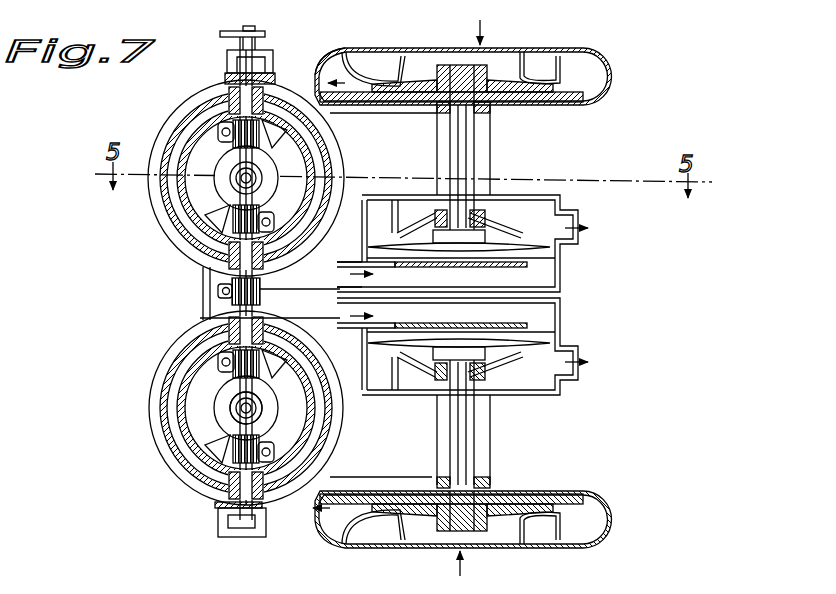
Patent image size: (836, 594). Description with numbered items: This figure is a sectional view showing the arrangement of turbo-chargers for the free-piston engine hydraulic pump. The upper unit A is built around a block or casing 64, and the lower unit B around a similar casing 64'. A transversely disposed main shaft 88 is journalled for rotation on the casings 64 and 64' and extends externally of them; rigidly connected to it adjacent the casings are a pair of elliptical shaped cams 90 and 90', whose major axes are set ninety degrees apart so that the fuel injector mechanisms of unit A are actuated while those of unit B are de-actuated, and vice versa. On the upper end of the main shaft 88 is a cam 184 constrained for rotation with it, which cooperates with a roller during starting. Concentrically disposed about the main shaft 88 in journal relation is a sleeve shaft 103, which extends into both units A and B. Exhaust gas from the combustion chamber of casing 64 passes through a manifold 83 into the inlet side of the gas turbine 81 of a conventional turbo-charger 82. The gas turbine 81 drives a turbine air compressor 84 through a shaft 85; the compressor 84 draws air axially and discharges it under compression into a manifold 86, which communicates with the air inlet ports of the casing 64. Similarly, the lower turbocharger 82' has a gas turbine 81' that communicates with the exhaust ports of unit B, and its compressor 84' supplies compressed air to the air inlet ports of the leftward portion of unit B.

The cam 184 is at (268, 37).
The manifold 86 is at (305, 76).
The elliptical shaped cam 90 is at (214, 71).
The upper unit A is at (160, 122).
The casing 64 is at (232, 178).
The sleeve shaft 103 is at (238, 276).
The turbine air compressor 84 is at (491, 83).
The shaft 85 is at (466, 143).
The turbo-charger 82 is at (501, 148).
The gas turbine 81 is at (476, 243).
The manifold 83 is at (332, 282).
The unit B is at (150, 407).
The casing 64' is at (223, 408).
The main shaft 88 is at (243, 433).
The elliptical shaped cam 90' is at (218, 531).
The compressor 84' is at (490, 519).
The turbocharger 82' is at (495, 424).
The gas turbine 81' is at (485, 346).